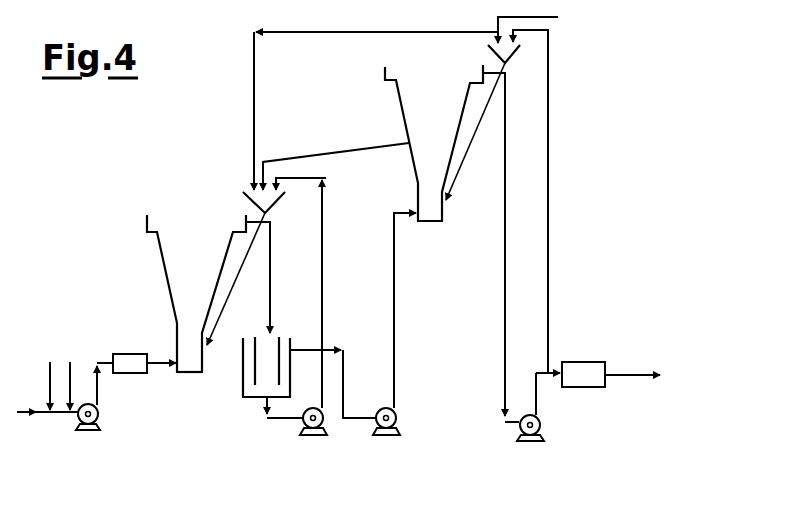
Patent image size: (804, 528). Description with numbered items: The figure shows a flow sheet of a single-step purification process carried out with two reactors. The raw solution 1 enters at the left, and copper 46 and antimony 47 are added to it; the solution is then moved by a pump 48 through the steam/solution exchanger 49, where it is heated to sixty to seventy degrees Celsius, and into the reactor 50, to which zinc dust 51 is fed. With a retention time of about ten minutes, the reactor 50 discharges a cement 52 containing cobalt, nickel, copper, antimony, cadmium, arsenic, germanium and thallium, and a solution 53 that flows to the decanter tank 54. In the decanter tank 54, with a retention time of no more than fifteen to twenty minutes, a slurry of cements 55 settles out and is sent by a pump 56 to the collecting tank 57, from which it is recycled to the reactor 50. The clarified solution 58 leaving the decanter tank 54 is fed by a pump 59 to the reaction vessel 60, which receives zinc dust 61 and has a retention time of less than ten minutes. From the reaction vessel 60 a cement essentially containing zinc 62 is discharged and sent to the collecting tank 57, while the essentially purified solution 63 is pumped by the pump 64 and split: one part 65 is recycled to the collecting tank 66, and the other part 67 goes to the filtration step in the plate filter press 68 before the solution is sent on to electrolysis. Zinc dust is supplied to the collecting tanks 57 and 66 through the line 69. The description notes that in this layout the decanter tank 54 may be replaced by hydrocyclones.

The raw solution 1 is at (22, 410).
The copper 46 is at (50, 366).
The antimony 47 is at (70, 366).
The pump 48 is at (99, 415).
The steam/solution exchanger 49 is at (128, 354).
The reactor 50 is at (189, 373).
The zinc dust 51 is at (221, 316).
The cement 52 is at (168, 290).
The solution 53 is at (271, 236).
The decanter tank 54 is at (262, 387).
The slurry of cements 55 is at (283, 420).
The pump 56 is at (324, 421).
The collecting tank 57 is at (285, 195).
The clarified solution 58 is at (304, 349).
The pump 59 is at (398, 420).
The reaction vessel 60 is at (429, 222).
The zinc dust 61 is at (453, 180).
The cement essentially containing zinc 62 is at (343, 150).
The solution 63 is at (507, 80).
The pump 64 is at (541, 426).
The recycled solution portion 65 is at (550, 232).
The collecting tank 66 is at (522, 47).
The solution portion sent to filtration 67 is at (548, 378).
The plate filter press 68 is at (586, 364).
The zinc dust feed line 69 is at (556, 17).